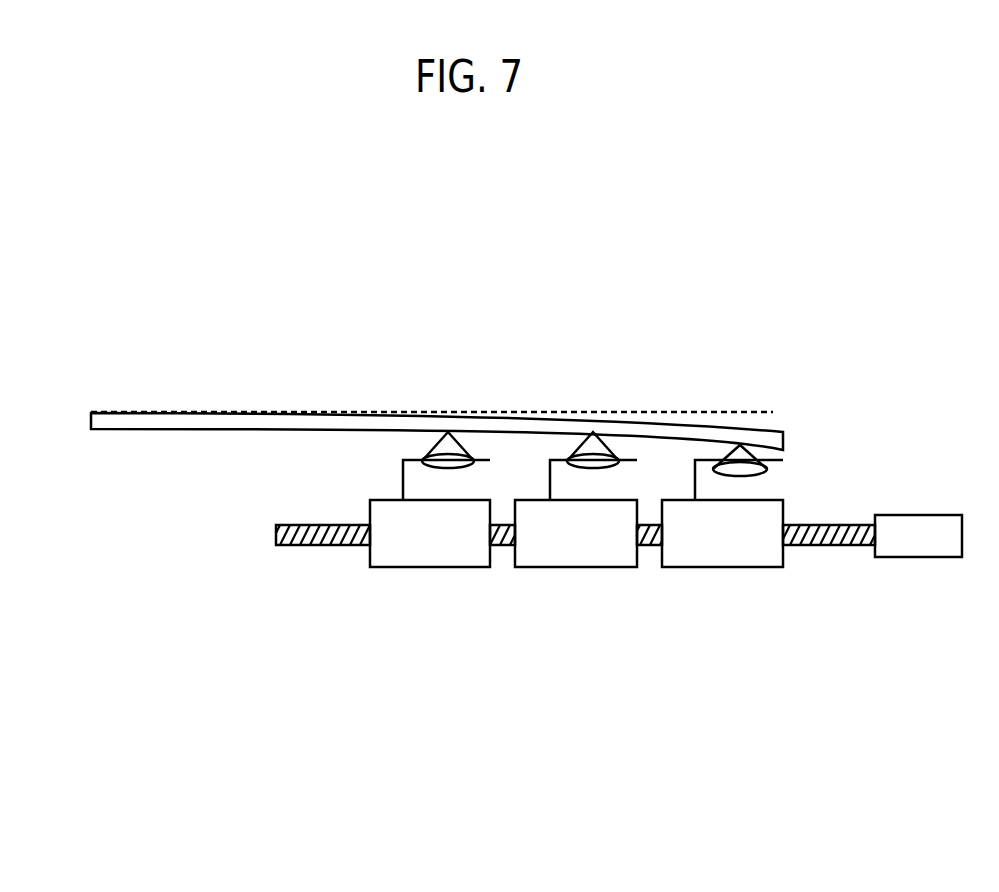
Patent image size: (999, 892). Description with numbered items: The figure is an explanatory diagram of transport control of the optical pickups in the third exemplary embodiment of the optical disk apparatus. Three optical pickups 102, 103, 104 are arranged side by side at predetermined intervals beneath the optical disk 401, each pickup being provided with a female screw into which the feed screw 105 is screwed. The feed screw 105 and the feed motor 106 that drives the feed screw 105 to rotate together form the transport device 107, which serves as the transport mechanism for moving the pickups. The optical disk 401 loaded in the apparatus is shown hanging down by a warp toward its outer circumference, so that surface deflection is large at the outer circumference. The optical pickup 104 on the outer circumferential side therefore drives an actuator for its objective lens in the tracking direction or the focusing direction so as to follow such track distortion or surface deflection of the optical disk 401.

The optical disk 401 is at (775, 430).
The optical pickup 102 is at (378, 512).
The optical pickup 103 is at (563, 543).
The optical pickup 104 is at (762, 515).
The feed screw 105 is at (830, 547).
The feed motor 106 is at (895, 533).
The transport device 107 is at (882, 601).